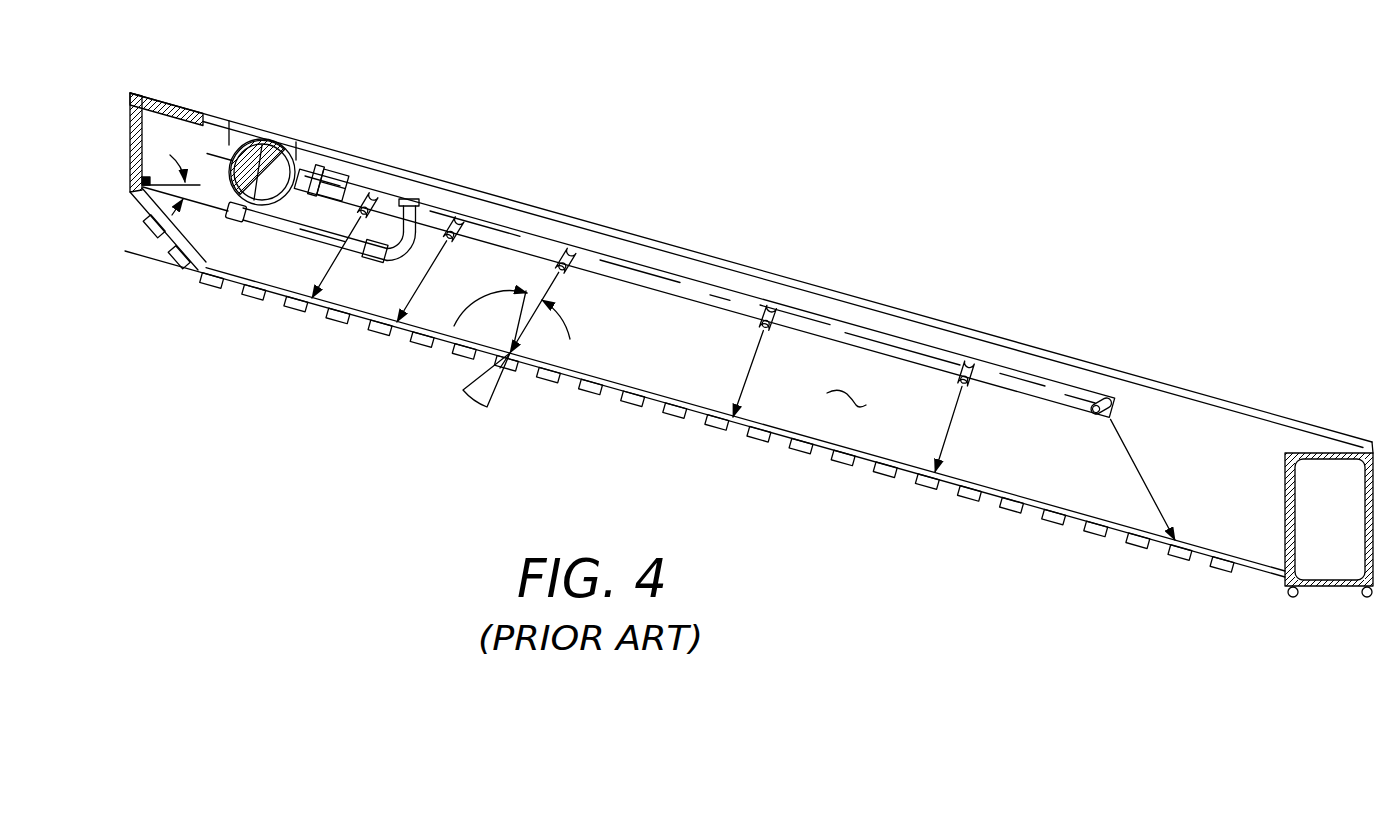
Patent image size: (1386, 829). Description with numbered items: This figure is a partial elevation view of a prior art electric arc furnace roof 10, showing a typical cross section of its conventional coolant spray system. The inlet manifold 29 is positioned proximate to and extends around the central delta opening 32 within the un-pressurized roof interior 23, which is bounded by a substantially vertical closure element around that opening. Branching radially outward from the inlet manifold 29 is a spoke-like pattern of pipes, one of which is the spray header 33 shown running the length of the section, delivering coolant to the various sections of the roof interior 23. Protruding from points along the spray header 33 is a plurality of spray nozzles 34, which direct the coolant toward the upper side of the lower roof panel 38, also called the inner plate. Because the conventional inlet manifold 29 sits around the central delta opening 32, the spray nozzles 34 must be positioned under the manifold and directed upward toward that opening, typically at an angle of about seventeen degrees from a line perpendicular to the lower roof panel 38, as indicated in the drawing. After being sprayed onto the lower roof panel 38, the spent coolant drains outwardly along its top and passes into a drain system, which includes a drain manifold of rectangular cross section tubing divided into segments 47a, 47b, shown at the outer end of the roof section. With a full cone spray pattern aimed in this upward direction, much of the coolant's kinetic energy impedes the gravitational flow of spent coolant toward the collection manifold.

The roof 10 is at (935, 190).
The roof interior 23 is at (842, 412).
The inlet manifold 29 is at (248, 137).
The central delta opening 32 is at (132, 143).
The spray header 33 is at (843, 316).
The spray nozzle 34 is at (368, 190).
The lower roof panel 38 is at (575, 366).
The drain manifold segment 47a is at (1279, 443).
The drain manifold segment 47b is at (1284, 452).